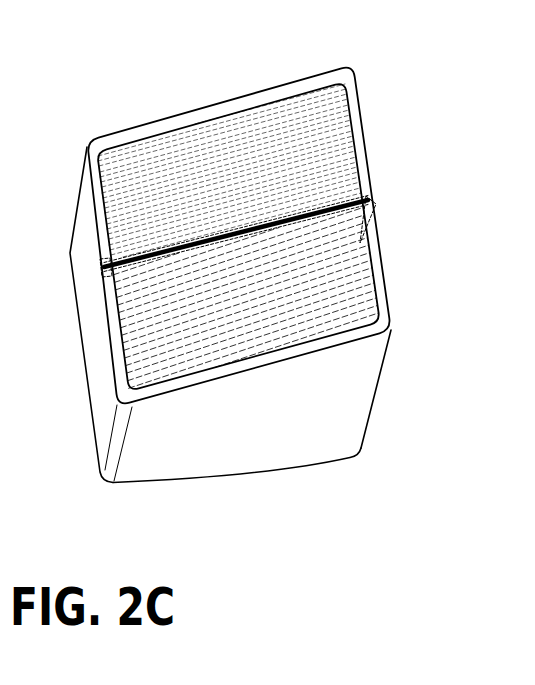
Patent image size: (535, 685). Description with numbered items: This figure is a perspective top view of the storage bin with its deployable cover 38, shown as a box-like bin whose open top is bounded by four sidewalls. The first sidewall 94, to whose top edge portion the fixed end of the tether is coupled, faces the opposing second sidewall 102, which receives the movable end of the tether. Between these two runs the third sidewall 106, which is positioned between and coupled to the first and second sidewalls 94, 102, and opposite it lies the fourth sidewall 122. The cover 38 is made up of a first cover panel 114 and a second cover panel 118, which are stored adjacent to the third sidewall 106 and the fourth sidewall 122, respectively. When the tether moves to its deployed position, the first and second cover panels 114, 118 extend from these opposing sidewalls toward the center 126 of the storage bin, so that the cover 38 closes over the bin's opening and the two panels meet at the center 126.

The cover 38 is at (314, 135).
The first sidewall 94 is at (93, 313).
The second sidewall 102 is at (372, 227).
The third sidewall 106 is at (267, 430).
The first cover panel 114 is at (273, 123).
The second cover panel 118 is at (358, 317).
The fourth sidewall 122 is at (128, 130).
The center 126 is at (250, 214).